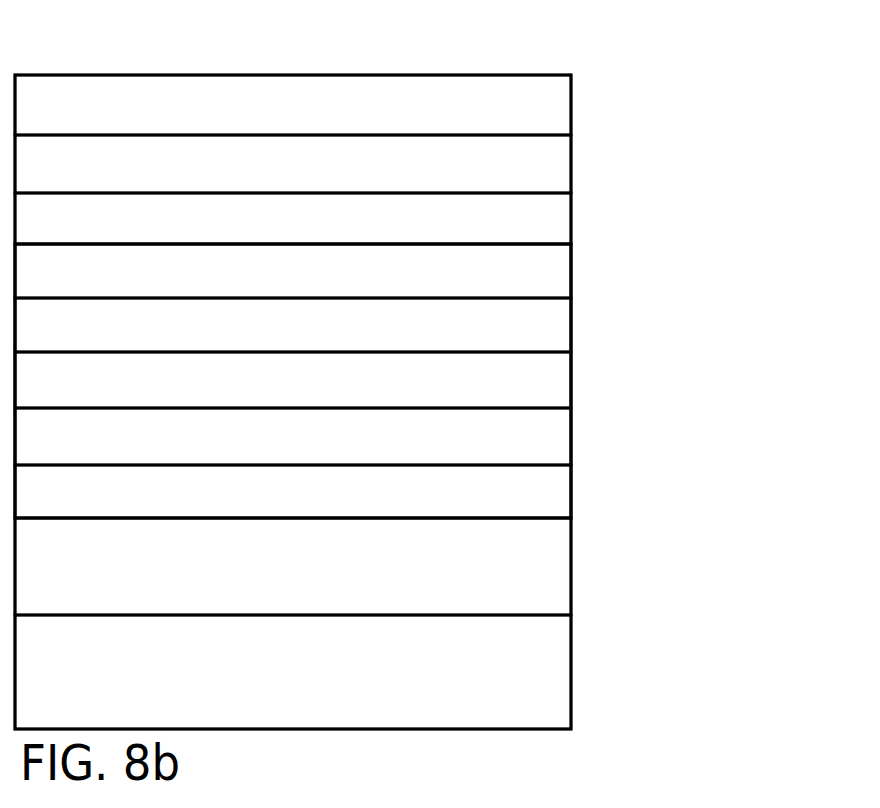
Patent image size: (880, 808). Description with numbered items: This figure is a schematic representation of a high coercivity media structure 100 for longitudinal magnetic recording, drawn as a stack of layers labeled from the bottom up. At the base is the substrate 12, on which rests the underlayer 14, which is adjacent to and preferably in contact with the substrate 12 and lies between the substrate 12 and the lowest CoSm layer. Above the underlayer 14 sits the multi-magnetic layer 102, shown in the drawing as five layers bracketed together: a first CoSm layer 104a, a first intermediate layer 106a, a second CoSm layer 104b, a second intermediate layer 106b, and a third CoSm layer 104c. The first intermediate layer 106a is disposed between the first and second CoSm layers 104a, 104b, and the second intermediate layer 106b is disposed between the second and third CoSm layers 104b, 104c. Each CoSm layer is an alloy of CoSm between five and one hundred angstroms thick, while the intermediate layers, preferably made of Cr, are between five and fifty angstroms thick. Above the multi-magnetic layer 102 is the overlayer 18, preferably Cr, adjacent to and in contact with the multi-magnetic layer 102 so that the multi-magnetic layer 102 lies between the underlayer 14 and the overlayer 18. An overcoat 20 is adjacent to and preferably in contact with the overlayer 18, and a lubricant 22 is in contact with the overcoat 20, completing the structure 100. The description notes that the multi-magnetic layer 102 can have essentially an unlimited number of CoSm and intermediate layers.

The high coercivity media structure 100 is at (158, 70).
The lubricant 22 is at (565, 98).
The overcoat 20 is at (558, 163).
The overlayer 18 is at (555, 225).
The third CoSm layer 104c is at (552, 288).
The second intermediate layer 106b is at (553, 338).
The second CoSm layer 104b is at (553, 393).
The first intermediate layer 106a is at (553, 447).
The first CoSm layer 104a is at (552, 497).
The multi-magnetic layer 102 is at (572, 244).
The underlayer 14 is at (550, 580).
The substrate 12 is at (555, 665).